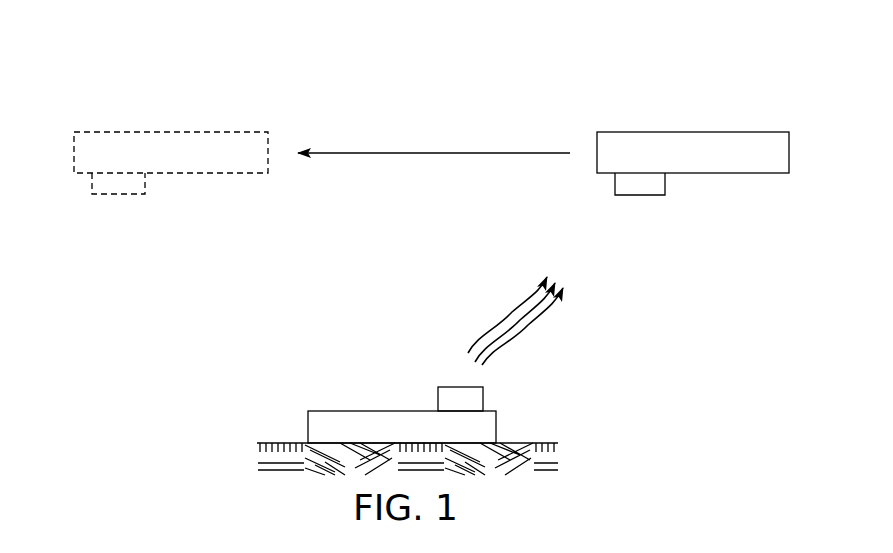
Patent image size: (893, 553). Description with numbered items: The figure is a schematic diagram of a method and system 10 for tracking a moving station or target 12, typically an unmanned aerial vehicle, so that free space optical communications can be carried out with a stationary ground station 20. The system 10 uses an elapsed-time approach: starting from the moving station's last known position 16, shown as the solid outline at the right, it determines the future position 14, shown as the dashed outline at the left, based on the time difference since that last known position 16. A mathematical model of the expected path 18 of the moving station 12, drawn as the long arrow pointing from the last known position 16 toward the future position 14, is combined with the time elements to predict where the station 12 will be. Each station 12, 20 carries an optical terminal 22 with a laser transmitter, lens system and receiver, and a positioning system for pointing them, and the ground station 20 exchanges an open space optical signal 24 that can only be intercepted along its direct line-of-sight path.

The tracking system 10 is at (592, 85).
The moving station 12 is at (195, 158).
The future position 14 is at (212, 108).
The last known position 16 is at (708, 110).
The expected path 18 is at (425, 152).
The ground station 20 is at (350, 422).
The optical terminal 22 is at (632, 185).
The open space optical signal 24 is at (517, 332).